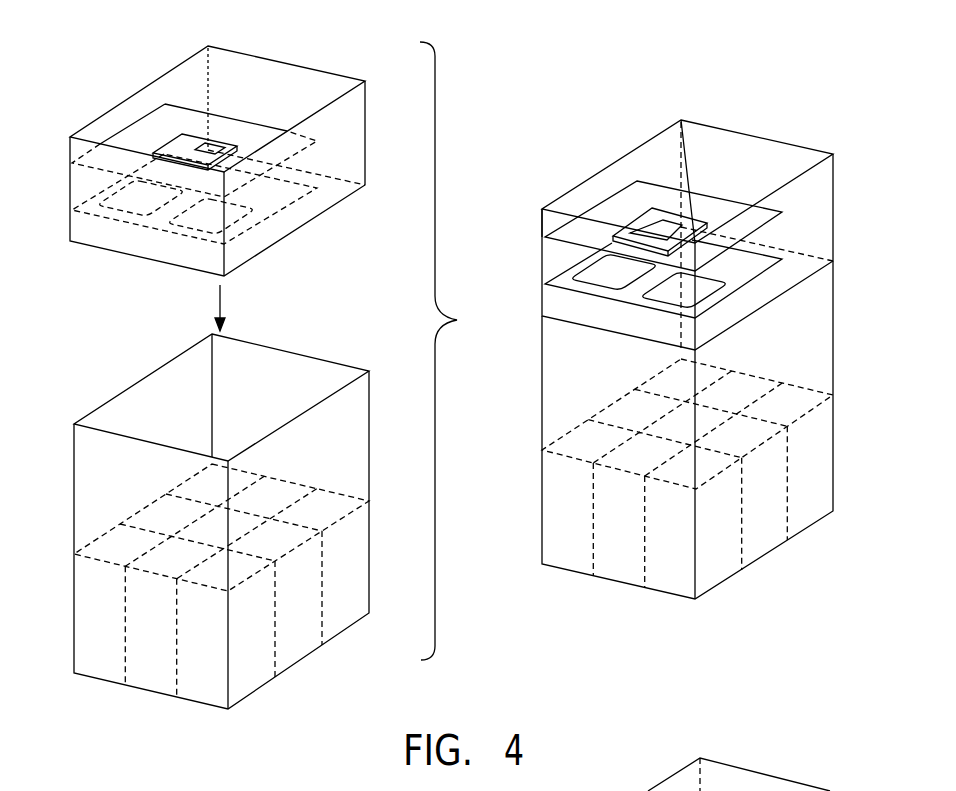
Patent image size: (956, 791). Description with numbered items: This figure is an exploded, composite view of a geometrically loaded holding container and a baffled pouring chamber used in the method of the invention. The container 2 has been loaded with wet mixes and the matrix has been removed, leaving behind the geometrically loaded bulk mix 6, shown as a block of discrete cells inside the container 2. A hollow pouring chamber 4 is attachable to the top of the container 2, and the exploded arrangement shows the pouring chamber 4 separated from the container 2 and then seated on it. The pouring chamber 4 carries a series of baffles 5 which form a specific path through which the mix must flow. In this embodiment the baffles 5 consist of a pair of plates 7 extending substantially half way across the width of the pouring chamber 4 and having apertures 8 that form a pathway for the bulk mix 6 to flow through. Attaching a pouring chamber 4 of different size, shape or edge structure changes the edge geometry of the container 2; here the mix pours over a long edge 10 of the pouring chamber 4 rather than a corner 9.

The container 2 is at (72, 452).
The pouring chamber 4 is at (70, 222).
The baffles 5 is at (129, 133).
The bulk mix 6 is at (148, 652).
The plates 7 is at (272, 131).
The apertures 8 is at (209, 153).
The corner 9 is at (195, 780).
The long edge 10 is at (568, 210).